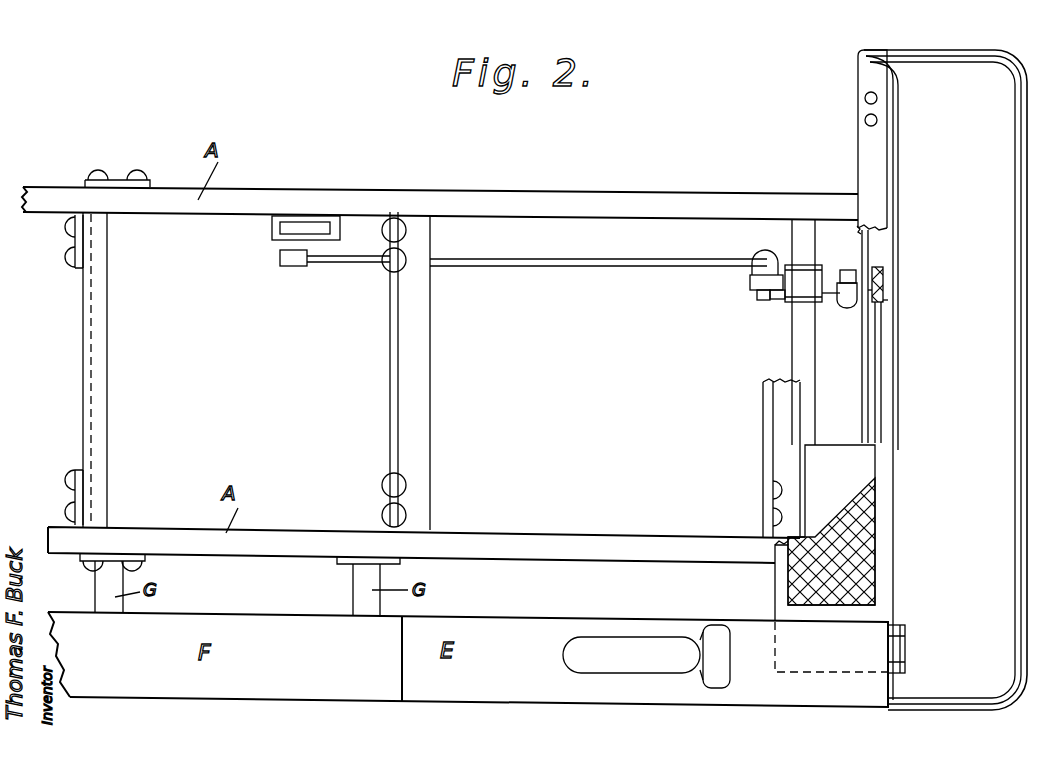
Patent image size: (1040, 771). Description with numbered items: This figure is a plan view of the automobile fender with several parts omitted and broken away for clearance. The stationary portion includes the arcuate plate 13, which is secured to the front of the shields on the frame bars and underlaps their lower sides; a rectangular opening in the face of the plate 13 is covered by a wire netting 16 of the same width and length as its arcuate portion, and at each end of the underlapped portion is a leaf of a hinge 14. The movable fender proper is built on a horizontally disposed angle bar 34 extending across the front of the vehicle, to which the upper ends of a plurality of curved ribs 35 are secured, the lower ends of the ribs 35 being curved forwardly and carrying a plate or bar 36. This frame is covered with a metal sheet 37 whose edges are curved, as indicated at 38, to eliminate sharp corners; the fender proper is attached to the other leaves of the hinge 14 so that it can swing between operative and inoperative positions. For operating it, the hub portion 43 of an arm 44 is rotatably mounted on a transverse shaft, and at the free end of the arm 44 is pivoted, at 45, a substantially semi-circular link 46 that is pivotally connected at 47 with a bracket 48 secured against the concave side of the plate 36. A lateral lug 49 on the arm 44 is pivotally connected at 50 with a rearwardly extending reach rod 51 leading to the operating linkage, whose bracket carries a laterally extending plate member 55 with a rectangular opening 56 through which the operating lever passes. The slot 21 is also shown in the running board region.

The plate 13 is at (829, 592).
The hinge 14 is at (902, 656).
The wire netting 16 is at (846, 505).
The slot 21 is at (646, 656).
The angle bar 34 is at (865, 150).
The curved ribs 35 is at (882, 291).
The plate or bar 36 is at (870, 388).
The metal sheet 37 is at (919, 315).
The curved edges 38 is at (892, 56).
The hub portion 43 is at (803, 283).
The arm 44 is at (783, 299).
The pivot 45 is at (846, 309).
The semi-circular link 46 is at (848, 272).
The pivotal connection 47 is at (862, 260).
The bracket 48 is at (885, 279).
The lateral lug 49 is at (750, 283).
The pivotal connection 50 is at (759, 299).
The reach rod 51 is at (583, 268).
The plate member 55 is at (272, 223).
The rectangular opening 56 is at (290, 229).